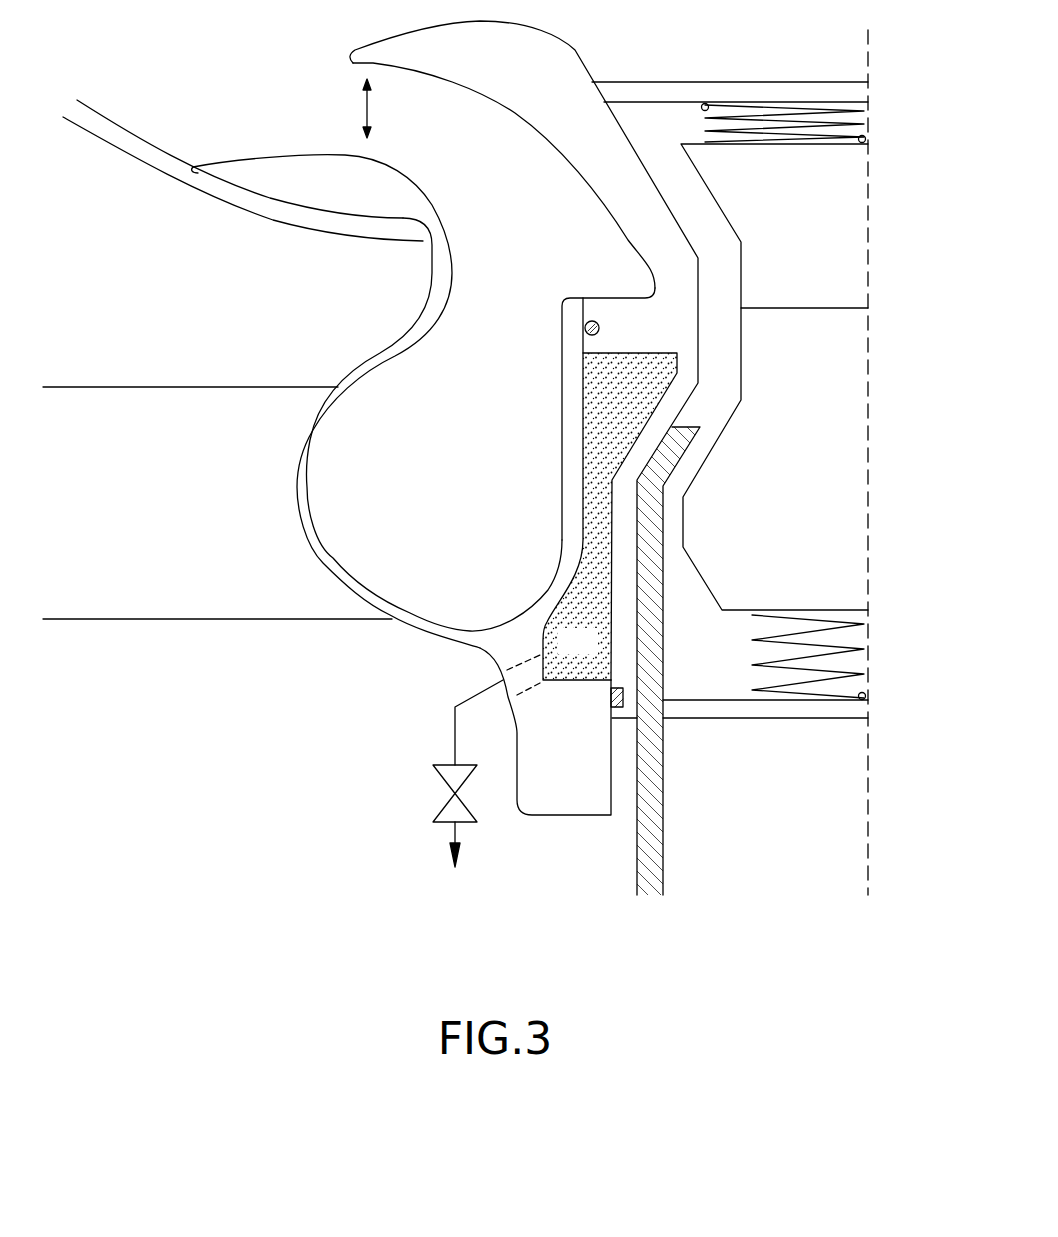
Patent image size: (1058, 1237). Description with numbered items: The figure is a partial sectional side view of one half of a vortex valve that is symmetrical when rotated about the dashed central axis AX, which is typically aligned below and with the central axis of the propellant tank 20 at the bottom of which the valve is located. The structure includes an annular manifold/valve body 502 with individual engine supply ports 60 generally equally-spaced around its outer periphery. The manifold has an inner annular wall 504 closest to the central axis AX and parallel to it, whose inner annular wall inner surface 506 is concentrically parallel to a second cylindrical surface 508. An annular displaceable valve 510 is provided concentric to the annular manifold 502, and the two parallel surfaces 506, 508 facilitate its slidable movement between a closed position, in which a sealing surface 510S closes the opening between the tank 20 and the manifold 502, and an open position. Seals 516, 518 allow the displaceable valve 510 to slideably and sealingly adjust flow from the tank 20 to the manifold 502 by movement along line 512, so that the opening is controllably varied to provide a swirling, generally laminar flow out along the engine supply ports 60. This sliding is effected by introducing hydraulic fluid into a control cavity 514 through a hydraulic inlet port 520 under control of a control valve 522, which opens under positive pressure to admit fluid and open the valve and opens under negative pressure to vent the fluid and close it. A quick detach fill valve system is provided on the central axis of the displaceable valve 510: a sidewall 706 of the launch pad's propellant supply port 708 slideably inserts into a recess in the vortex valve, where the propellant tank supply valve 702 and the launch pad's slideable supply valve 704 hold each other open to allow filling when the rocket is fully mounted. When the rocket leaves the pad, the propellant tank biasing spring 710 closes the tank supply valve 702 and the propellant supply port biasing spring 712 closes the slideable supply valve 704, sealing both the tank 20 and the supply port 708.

The propellant tank 20 is at (186, 116).
The individual engine supply port 60 is at (207, 620).
The annular manifold/valve body 502 is at (432, 566).
The inner annular wall 504 is at (562, 468).
The inner annular wall inner surface 506 is at (583, 417).
The second cylindrical surface 508 is at (611, 762).
The annular displaceable valve 510 is at (557, 43).
The sealing surface 510S is at (383, 63).
The line of movement 512 is at (362, 108).
The control cavity 514 is at (560, 650).
The seal 516 is at (602, 329).
The seal 518 is at (609, 697).
The hydraulic inlet port 520 is at (503, 670).
The control valve 522 is at (443, 800).
The propellant tank supply valve 702 is at (783, 239).
The slideable supply valve 704 is at (763, 510).
The sidewall 706 is at (663, 843).
The propellant supply port 708 is at (867, 107).
The propellant tank biasing spring 710 is at (747, 785).
The propellant supply port biasing spring 712 is at (867, 645).
The central axis AX is at (868, 280).